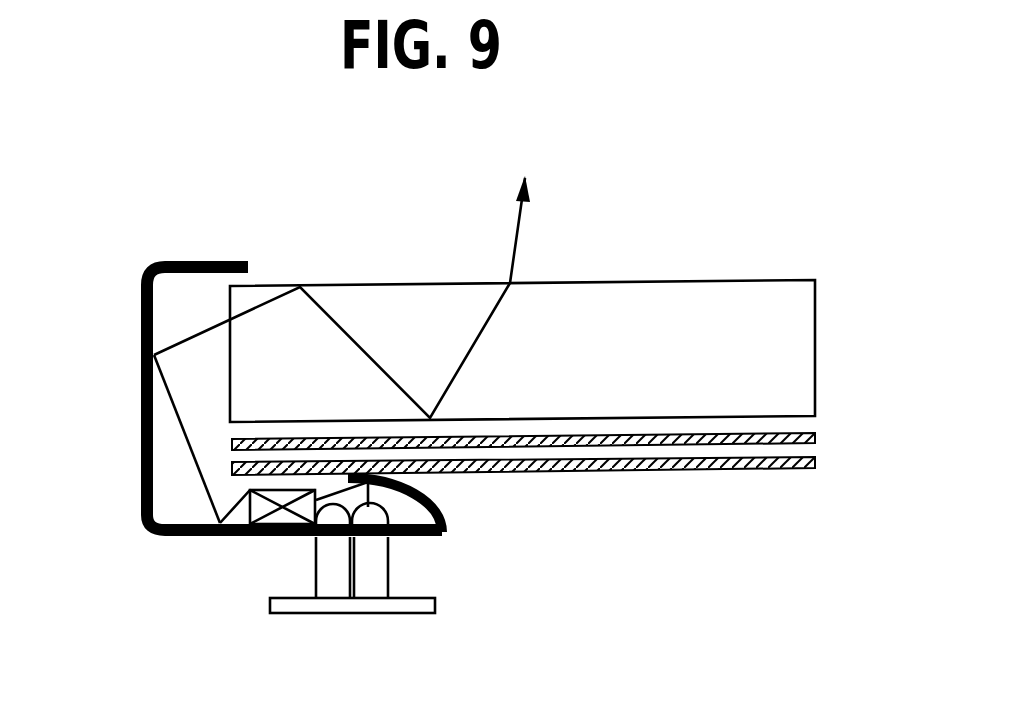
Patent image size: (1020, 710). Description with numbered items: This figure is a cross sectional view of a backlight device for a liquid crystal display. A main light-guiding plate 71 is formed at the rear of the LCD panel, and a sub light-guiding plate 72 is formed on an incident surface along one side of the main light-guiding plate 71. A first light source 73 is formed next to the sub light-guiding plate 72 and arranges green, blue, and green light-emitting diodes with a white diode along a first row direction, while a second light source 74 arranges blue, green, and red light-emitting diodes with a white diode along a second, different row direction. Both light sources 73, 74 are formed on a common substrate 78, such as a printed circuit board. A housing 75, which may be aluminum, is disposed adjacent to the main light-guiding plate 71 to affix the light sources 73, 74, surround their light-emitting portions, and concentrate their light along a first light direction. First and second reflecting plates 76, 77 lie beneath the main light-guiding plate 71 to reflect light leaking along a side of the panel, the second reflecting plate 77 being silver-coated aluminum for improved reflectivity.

The main light-guiding plate 71 is at (800, 348).
The sub light-guiding plate 72 is at (257, 541).
The first light source 73 is at (337, 587).
The second light source 74 is at (377, 572).
The housing 75 is at (142, 452).
The first reflecting plate 76 is at (815, 438).
The second reflecting plate 77 is at (815, 463).
The substrate 78 is at (375, 607).